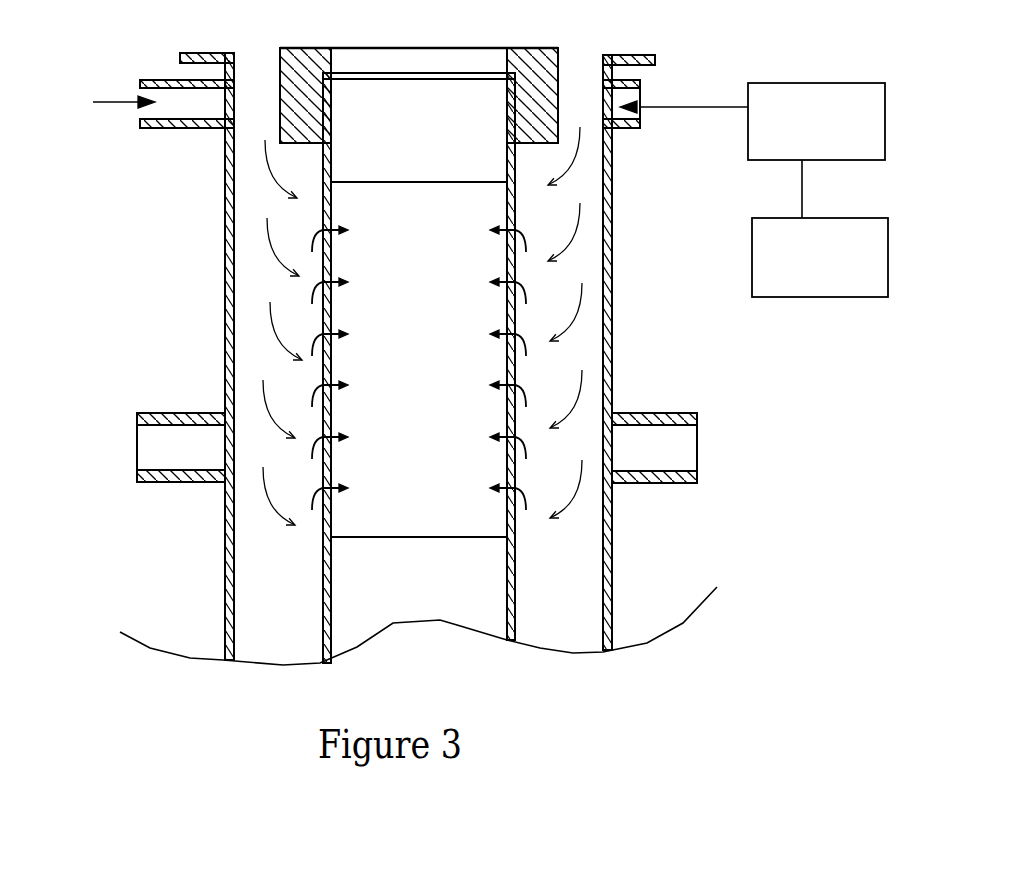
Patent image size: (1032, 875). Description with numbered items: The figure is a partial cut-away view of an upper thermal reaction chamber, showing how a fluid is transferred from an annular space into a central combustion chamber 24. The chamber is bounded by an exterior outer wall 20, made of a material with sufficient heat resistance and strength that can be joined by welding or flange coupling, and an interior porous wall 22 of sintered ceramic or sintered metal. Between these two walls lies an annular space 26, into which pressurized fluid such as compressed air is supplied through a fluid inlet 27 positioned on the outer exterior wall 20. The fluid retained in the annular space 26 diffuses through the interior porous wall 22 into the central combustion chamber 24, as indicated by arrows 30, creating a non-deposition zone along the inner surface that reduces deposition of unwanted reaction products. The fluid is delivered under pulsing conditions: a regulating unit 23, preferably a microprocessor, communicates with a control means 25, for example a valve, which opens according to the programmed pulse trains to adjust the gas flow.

The exterior outer wall 20 is at (610, 350).
The interior porous wall 22 is at (507, 320).
The regulating unit 23 is at (840, 297).
The central combustion chamber 24 is at (437, 481).
The control means 25 is at (828, 82).
The annular space 26 is at (247, 272).
The fluid inlet 27 is at (650, 107).
The arrows 30 is at (419, 368).